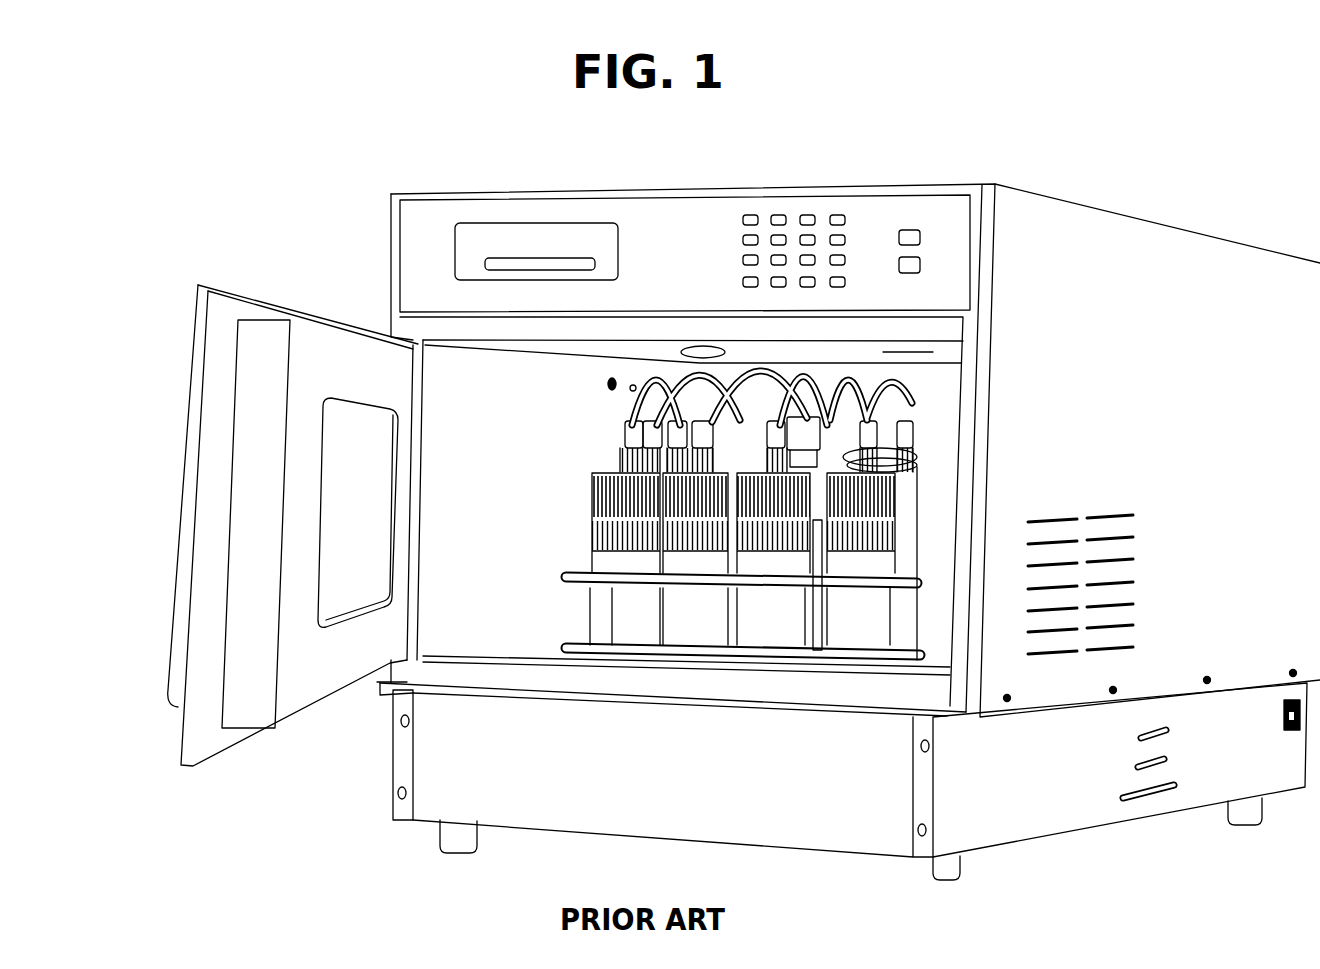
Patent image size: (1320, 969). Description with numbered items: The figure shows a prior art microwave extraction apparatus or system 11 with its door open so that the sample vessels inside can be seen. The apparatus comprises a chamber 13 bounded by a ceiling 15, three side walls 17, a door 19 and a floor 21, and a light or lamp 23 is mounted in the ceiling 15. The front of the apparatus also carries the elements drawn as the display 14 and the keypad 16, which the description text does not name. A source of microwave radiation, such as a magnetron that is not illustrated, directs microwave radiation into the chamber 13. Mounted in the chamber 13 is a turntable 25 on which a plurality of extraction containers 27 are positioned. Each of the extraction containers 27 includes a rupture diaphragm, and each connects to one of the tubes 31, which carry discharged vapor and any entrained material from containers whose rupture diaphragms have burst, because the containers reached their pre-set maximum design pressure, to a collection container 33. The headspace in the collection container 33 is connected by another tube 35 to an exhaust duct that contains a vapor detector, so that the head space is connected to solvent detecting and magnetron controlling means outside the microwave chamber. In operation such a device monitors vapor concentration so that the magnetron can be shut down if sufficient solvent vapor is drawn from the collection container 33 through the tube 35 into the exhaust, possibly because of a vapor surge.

The microwave extraction apparatus 11 is at (704, 183).
The chamber 13 is at (512, 484).
The display 14 is at (533, 222).
The ceiling 15 is at (933, 352).
The keypad 16 is at (818, 213).
The side walls 17 is at (400, 692).
The door 19 is at (318, 345).
The floor 21 is at (550, 655).
The lamp 23 is at (707, 346).
The turntable 25 is at (775, 650).
The extraction containers 27 is at (871, 643).
The tubes 31 is at (908, 396).
The collection container 33 is at (887, 455).
The tube 35 is at (633, 390).